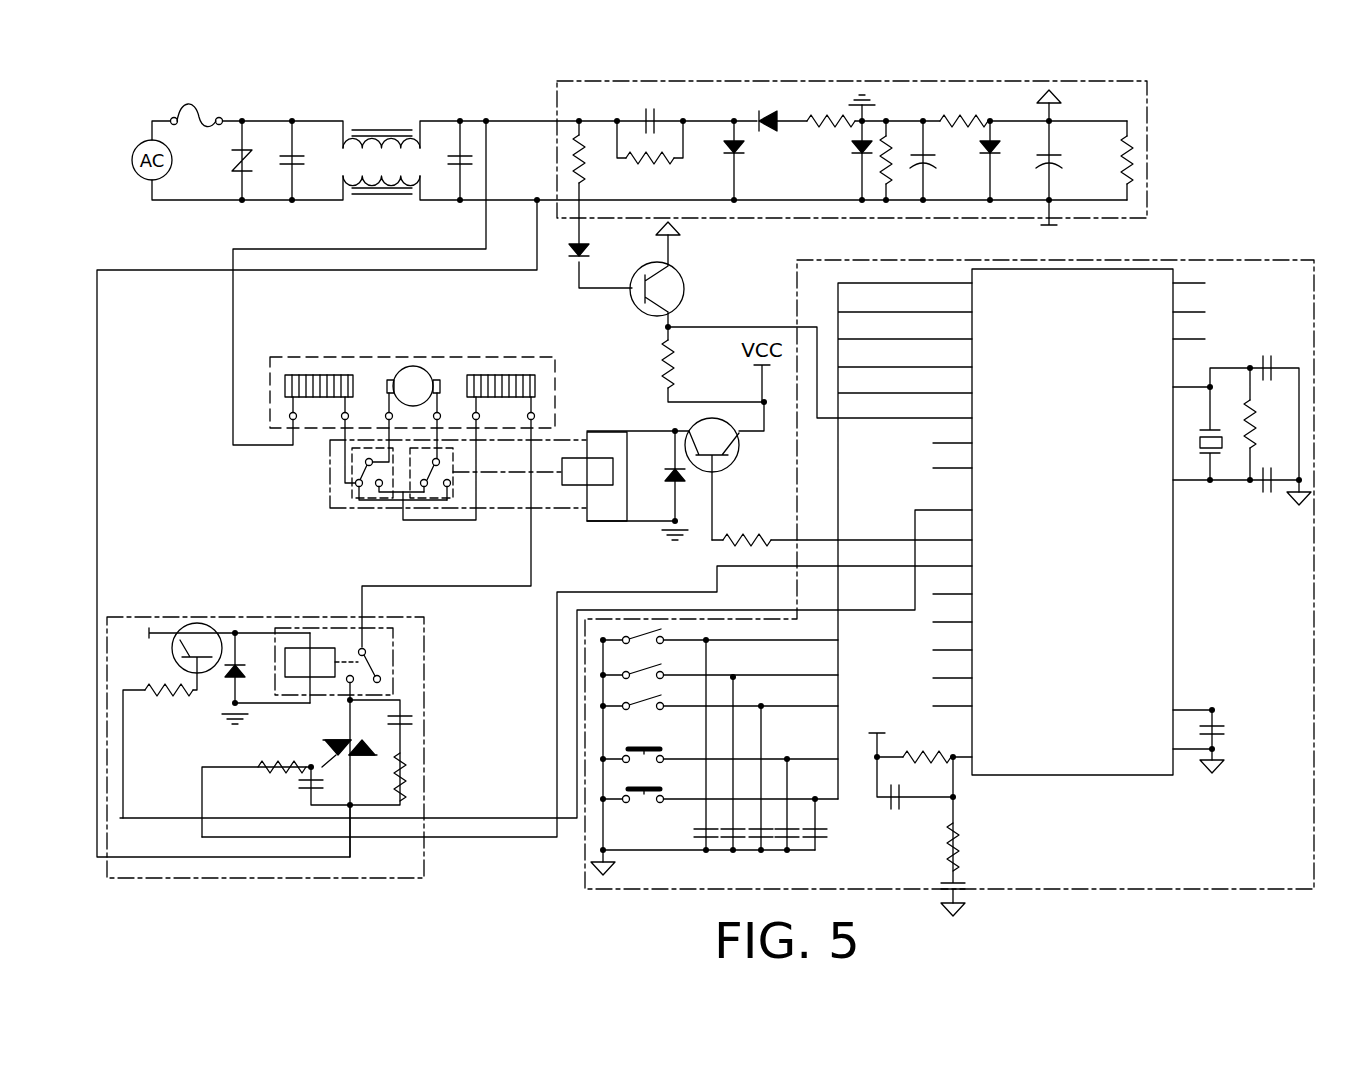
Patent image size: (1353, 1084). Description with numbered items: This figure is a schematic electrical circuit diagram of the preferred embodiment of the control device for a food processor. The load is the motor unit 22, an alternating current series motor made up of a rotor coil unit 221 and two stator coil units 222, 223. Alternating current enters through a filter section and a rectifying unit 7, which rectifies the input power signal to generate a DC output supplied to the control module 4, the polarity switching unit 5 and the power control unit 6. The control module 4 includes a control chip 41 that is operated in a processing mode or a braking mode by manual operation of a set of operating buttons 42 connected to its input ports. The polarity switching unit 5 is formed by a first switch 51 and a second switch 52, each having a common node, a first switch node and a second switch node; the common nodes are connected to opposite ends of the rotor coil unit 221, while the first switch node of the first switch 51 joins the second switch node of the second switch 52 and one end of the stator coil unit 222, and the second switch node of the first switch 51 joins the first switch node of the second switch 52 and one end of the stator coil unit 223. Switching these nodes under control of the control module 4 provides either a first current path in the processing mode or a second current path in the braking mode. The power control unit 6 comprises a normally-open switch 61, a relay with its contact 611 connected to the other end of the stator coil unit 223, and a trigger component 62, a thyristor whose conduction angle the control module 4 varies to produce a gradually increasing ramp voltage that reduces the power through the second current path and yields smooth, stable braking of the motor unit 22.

The rectifying unit 7 is at (1150, 92).
The control module 4 is at (717, 588).
The control chip 41 is at (1176, 585).
The operating buttons 42 is at (647, 630).
The motor unit 22 is at (455, 467).
The rotor coil unit 221 is at (412, 364).
The stator coil unit 222 is at (306, 372).
The stator coil unit 223 is at (503, 369).
The polarity switching unit 5 is at (465, 501).
The first switch 51 is at (353, 492).
The second switch 52 is at (456, 490).
The power control unit 6 is at (323, 754).
The normally-open switch 61 is at (389, 661).
The relay switch 611 is at (381, 666).
The trigger component 62 is at (374, 748).